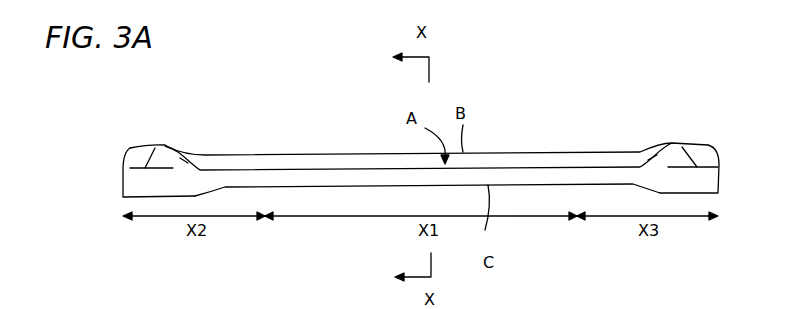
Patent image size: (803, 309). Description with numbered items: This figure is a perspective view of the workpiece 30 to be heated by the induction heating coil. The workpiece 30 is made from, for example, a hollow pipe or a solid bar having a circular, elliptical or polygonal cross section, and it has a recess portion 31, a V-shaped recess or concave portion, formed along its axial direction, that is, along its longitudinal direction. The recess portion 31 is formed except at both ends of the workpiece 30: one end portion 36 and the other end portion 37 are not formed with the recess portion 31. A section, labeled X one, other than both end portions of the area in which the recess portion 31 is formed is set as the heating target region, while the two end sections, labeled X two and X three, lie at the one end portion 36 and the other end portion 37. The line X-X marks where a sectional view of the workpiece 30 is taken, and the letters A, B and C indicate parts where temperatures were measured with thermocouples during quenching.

The workpiece 30 is at (421, 185).
The recess portion 31 is at (339, 162).
The one end portion 36 is at (140, 150).
The other end portion 37 is at (695, 145).